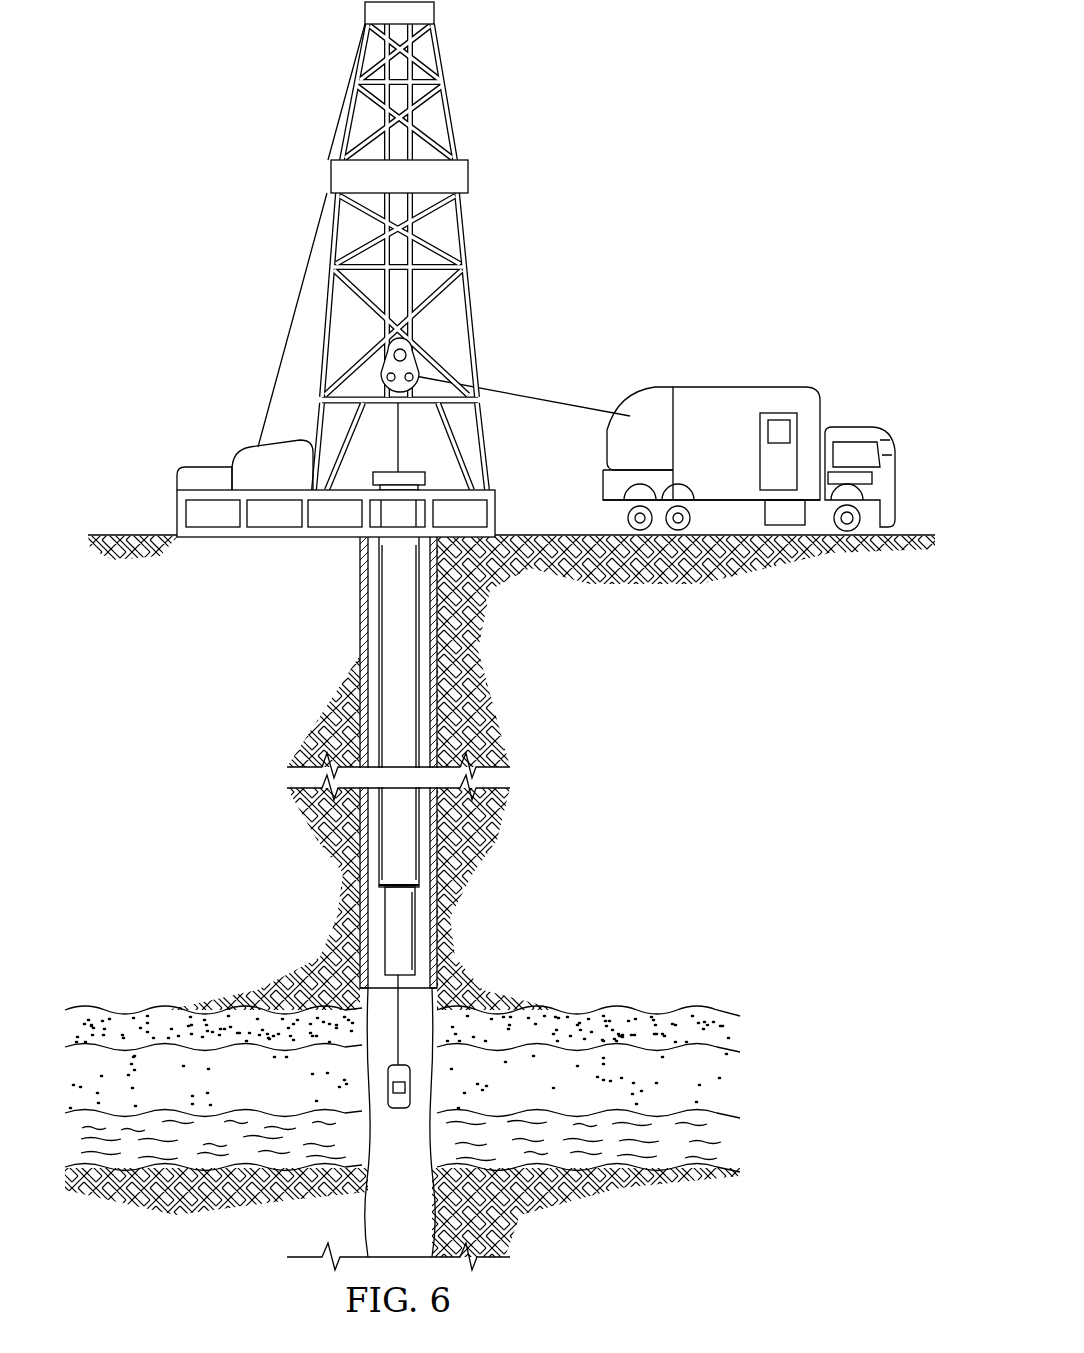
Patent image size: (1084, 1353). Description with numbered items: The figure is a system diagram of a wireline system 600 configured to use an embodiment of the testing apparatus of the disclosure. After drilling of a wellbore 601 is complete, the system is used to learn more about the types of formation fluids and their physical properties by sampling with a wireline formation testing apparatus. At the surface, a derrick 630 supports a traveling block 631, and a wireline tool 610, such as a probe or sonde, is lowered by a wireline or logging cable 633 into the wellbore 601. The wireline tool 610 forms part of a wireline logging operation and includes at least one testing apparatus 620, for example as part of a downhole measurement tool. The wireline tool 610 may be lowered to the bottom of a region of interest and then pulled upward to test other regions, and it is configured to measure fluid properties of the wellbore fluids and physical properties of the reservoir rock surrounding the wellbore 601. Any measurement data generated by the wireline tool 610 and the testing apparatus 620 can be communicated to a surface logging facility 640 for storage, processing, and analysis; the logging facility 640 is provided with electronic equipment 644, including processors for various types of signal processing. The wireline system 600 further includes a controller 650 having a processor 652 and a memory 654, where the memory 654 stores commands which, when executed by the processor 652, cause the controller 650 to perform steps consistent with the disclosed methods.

The wireline system 600 is at (236, 109).
The wellbore 601 is at (374, 1205).
The wireline tool 610 is at (411, 1085).
The testing apparatus 620 is at (399, 1110).
The derrick 630 is at (490, 483).
The traveling block 631 is at (420, 362).
The logging cable 633 is at (540, 395).
The surface logging facility 640 is at (735, 387).
The electronic equipment 644 is at (781, 417).
The controller 650 is at (321, 597).
The processor 652 is at (205, 537).
The memory 654 is at (280, 537).